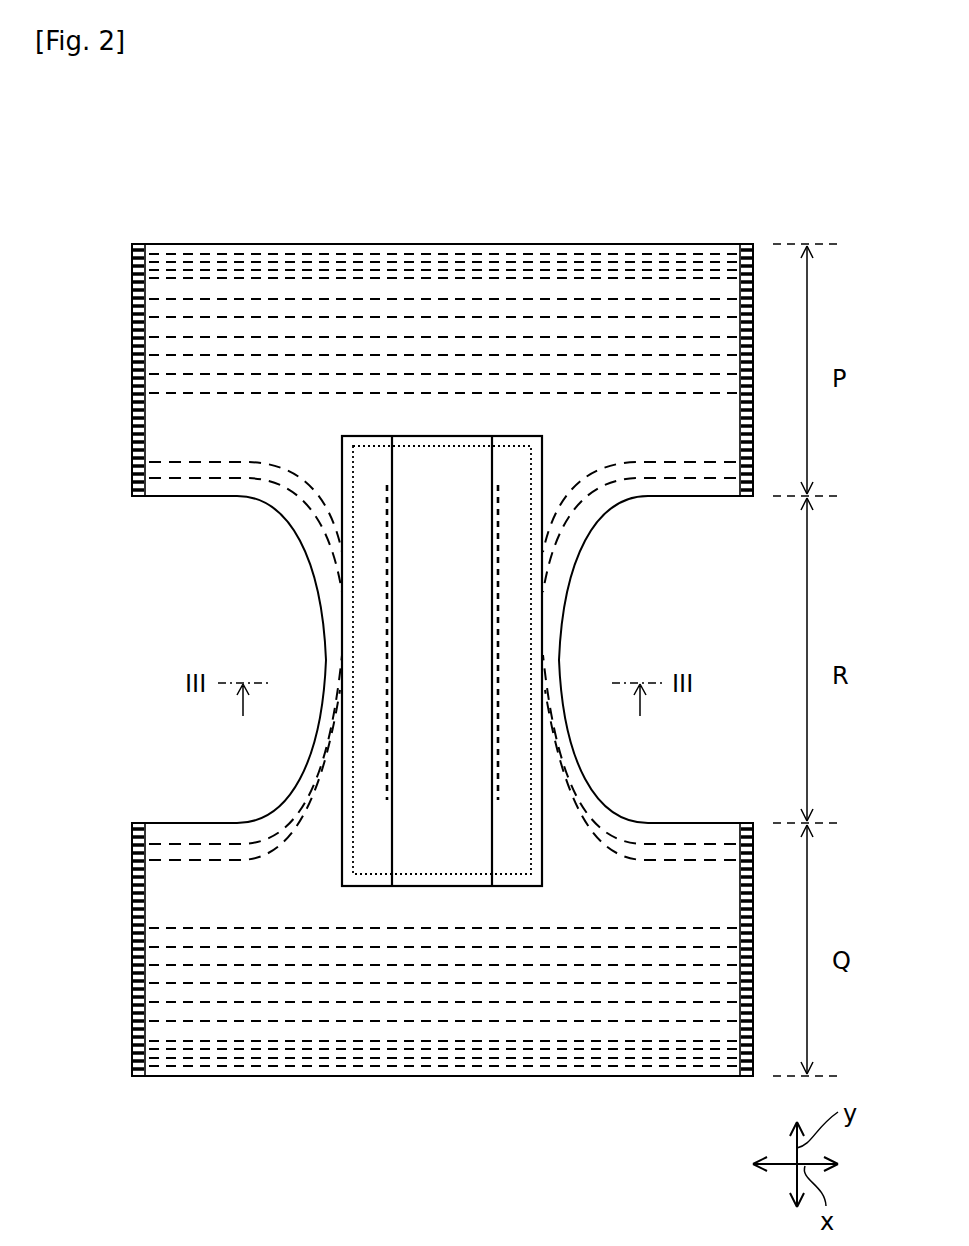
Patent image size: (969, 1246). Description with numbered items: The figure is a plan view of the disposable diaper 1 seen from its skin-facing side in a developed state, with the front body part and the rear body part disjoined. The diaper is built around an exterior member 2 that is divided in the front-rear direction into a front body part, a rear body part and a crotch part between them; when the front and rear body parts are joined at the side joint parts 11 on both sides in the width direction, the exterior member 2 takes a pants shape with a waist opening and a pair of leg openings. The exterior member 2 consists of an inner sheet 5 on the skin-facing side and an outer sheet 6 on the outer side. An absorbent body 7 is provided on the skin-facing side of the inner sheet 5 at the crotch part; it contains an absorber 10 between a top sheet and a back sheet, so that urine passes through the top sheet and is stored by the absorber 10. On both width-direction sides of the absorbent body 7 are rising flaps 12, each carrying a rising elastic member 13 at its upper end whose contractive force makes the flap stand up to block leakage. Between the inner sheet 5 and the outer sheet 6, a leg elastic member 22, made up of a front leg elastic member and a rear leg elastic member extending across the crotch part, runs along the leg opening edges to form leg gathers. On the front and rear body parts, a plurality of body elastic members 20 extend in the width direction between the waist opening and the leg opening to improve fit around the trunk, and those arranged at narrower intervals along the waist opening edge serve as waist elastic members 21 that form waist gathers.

The disposable diaper 1 is at (767, 217).
The exterior member 2 is at (647, 168).
The inner sheet 5 is at (603, 290).
The outer sheet 6 is at (635, 258).
The absorbent body 7 is at (548, 607).
The absorber 10 is at (356, 550).
The side joint parts 11 is at (140, 345).
The rising flap 12 is at (372, 592).
The rising elastic member 13 is at (388, 630).
The body elastic members 20 is at (295, 292).
The waist elastic members 21 is at (227, 250).
The leg elastic member 22 is at (169, 485).